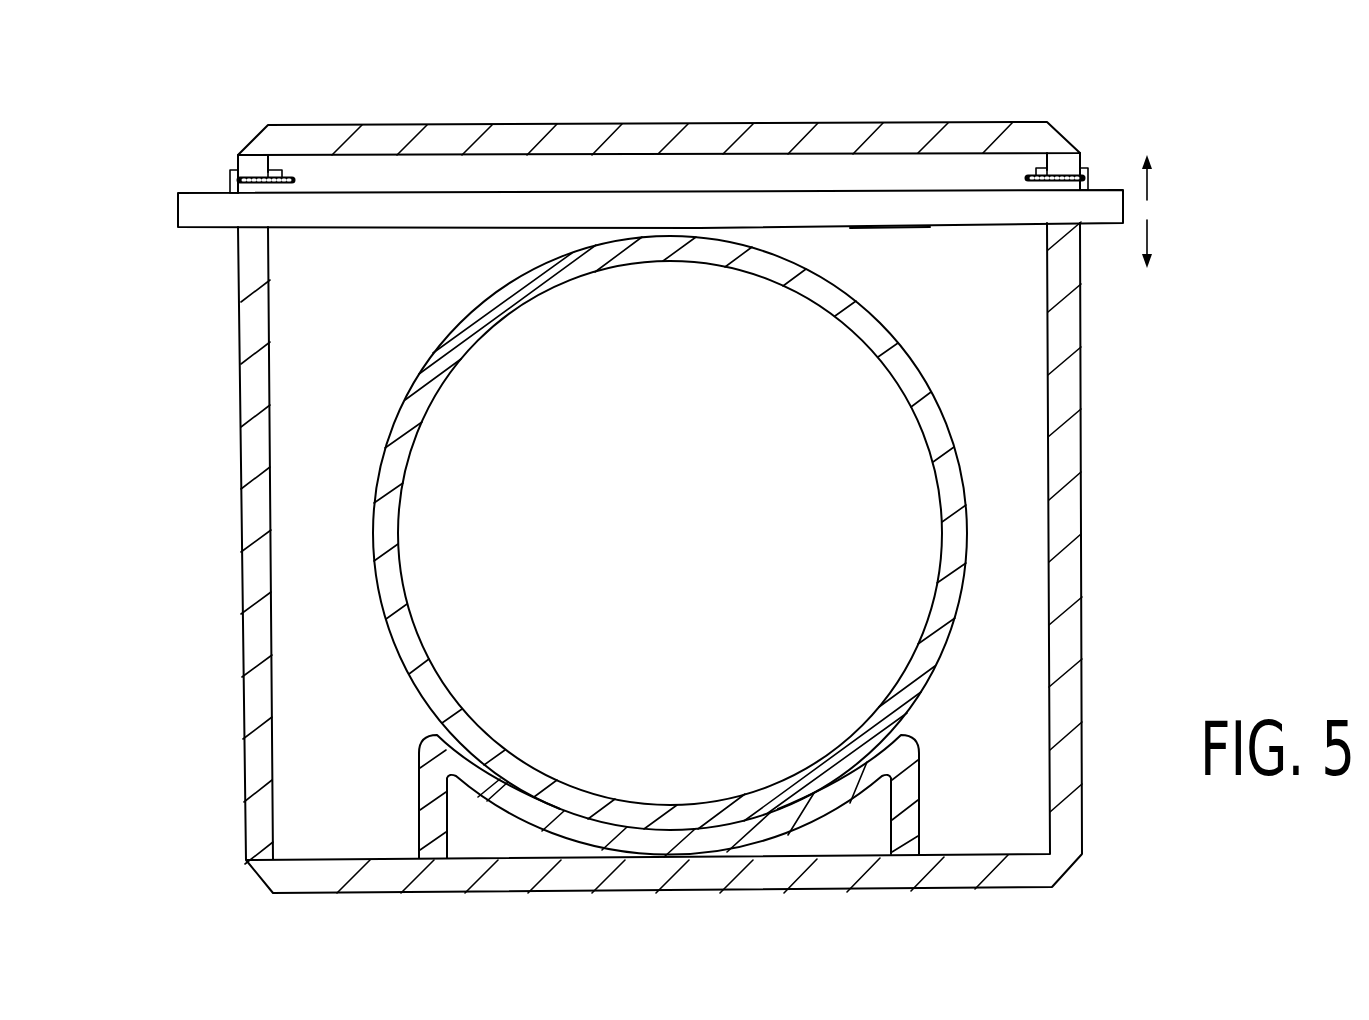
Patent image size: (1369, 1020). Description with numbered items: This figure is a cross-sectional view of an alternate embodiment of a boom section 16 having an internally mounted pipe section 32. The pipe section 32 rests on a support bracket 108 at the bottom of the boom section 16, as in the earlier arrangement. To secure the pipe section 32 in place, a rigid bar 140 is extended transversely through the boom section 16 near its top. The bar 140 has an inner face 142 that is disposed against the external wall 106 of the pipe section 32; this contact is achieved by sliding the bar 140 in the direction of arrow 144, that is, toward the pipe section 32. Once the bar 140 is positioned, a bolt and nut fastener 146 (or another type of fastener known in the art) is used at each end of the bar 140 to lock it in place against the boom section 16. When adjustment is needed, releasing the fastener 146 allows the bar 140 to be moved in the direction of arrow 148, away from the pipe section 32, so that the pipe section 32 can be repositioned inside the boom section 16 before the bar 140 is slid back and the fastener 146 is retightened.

The boom section 16 is at (895, 118).
The pipe section 32 is at (930, 351).
The external wall 106 is at (425, 358).
The support bracket 108 is at (932, 780).
The rigid bar 140 is at (187, 212).
The inner face 142 is at (889, 228).
The arrow 144 is at (1150, 232).
The bolt and nut fastener 146 is at (238, 165).
The arrow 148 is at (1150, 183).